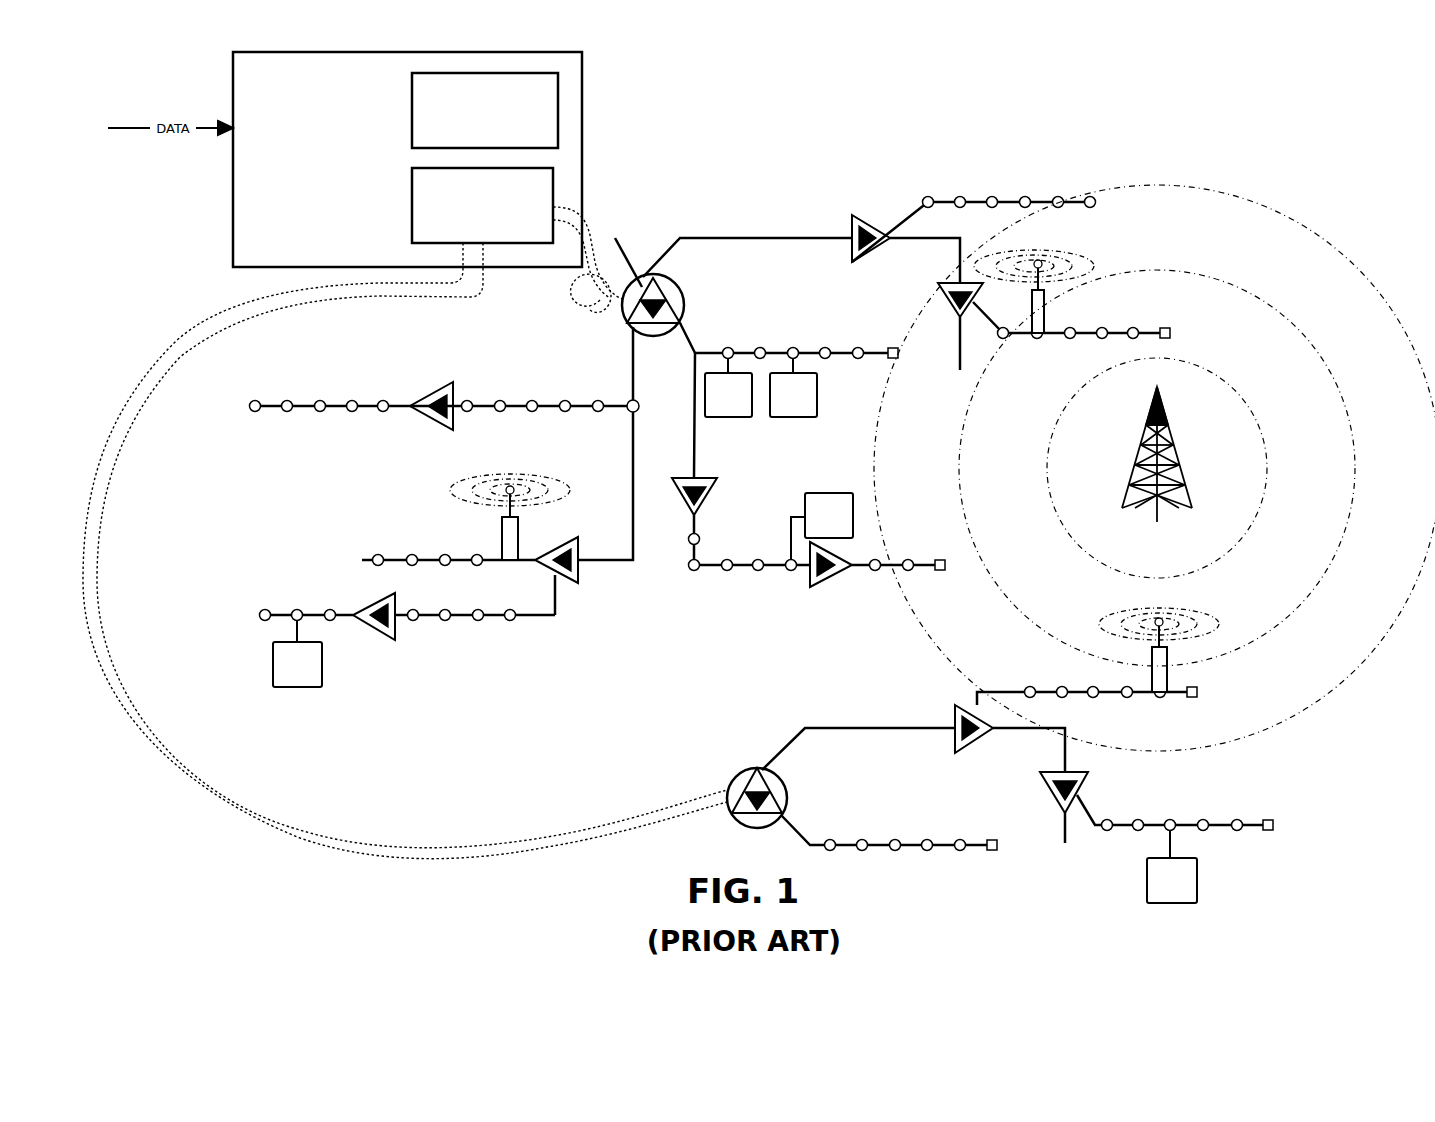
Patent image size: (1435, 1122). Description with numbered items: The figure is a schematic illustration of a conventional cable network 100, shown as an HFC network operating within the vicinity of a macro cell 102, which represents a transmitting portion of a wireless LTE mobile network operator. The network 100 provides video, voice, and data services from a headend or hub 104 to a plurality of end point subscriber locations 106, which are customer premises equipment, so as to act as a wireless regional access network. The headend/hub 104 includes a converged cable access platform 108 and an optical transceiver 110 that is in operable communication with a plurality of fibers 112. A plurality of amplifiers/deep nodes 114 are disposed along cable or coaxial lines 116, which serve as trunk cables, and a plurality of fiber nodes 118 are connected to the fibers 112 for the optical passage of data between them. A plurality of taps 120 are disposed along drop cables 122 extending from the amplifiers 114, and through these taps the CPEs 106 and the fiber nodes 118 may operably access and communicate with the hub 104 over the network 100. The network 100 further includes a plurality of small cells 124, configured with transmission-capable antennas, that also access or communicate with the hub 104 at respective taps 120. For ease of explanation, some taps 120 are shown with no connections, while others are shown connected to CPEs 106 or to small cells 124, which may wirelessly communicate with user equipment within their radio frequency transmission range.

The cable network 100 is at (1150, 140).
The macro cell 102 is at (1192, 444).
The headend/hub 104 is at (407, 159).
The end point subscriber location 106 is at (735, 630).
The converged cable access platform 108 is at (485, 110).
The optical transceiver 110 is at (482, 205).
The fibers 112 is at (172, 343).
The amplifiers/deep nodes 114 is at (600, 600).
The coaxial lines 116 is at (682, 247).
The fiber nodes 118 is at (645, 250).
The taps 120 is at (960, 196).
The drop cables 122 is at (548, 400).
The small cells 124 is at (450, 515).